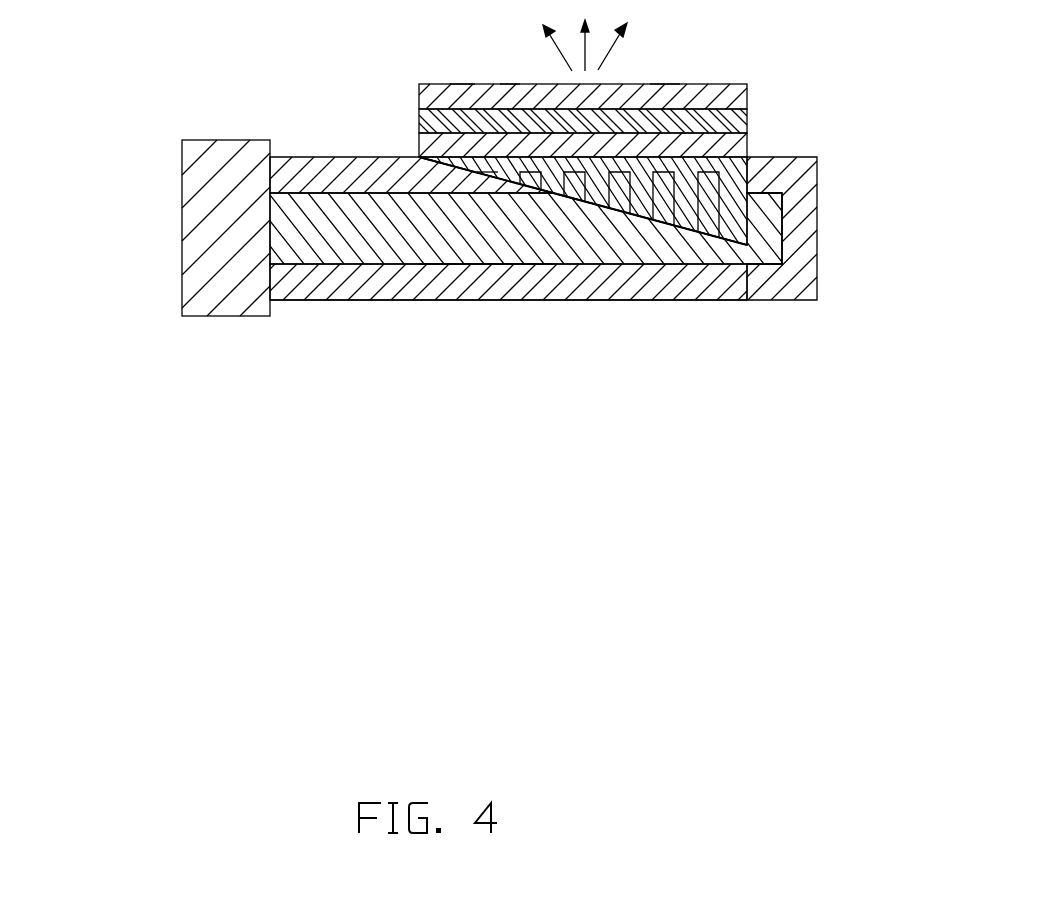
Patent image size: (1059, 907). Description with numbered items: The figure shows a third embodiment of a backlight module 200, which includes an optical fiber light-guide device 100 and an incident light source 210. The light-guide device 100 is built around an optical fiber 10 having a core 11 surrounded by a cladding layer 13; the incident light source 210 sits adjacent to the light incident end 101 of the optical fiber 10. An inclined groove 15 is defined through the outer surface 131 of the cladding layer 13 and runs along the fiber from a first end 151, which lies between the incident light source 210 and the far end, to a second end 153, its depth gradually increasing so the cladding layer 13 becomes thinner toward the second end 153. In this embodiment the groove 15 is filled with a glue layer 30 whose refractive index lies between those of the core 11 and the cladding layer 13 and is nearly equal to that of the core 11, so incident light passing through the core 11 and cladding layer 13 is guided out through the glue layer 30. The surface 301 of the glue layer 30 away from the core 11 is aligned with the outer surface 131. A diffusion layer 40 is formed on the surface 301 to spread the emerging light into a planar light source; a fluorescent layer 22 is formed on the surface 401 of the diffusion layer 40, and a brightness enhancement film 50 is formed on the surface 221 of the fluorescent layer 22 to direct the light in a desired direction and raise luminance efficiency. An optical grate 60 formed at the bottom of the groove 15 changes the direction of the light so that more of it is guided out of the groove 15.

The optical fiber 10 is at (383, 70).
The core 11 is at (413, 240).
The cladding layer 13 is at (348, 170).
The inclined groove 15 is at (450, 263).
The first end 151 is at (450, 264).
The second end 153 is at (762, 222).
The light incident end 101 is at (270, 300).
The outer surface 131 is at (778, 158).
The glue layer 30 is at (747, 137).
The surface 301 is at (663, 87).
The optical grate 60 is at (703, 228).
The diffusion layer 40 is at (747, 110).
The surface 401 is at (509, 87).
The fluorescent layer 22 is at (747, 88).
The surface 221 is at (462, 85).
The brightness enhancement film 50 is at (725, 85).
The optical fiber light-guide device 100 is at (285, 126).
The backlight module 200 is at (102, 107).
The incident light source 210 is at (205, 177).